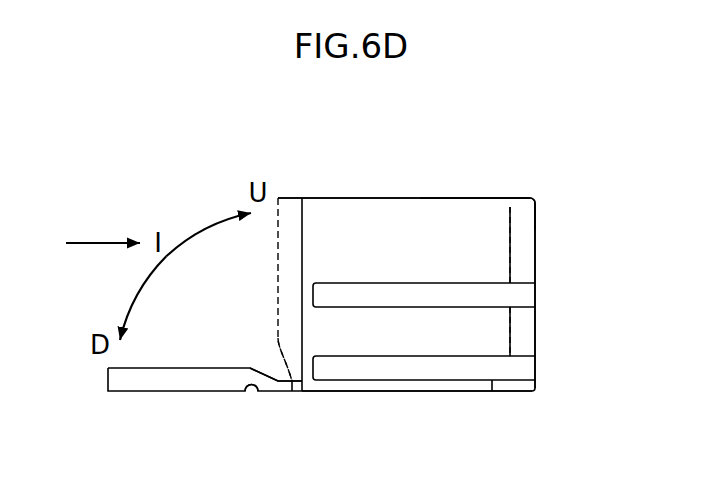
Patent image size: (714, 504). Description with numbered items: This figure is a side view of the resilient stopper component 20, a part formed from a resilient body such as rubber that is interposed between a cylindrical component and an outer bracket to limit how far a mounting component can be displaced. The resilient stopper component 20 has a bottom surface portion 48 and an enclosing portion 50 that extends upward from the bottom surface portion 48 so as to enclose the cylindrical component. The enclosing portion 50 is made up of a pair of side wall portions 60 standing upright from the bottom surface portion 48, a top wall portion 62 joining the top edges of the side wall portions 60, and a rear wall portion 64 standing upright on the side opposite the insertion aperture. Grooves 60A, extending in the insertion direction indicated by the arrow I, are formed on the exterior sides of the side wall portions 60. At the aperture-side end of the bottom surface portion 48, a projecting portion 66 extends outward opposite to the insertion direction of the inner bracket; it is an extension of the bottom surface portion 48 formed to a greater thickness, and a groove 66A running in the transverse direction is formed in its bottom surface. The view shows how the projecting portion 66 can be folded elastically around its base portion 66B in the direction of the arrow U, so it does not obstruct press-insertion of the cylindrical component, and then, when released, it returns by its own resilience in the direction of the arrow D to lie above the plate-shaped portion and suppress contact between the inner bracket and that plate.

The resilient stopper component 20 is at (576, 201).
The top wall portion 62 is at (426, 194).
The enclosing portion 50 is at (523, 194).
The rear wall portion 64 is at (536, 233).
The side wall portions 60 is at (502, 258).
The grooves 60A is at (523, 293).
The bottom surface portion 48 is at (429, 395).
The projecting portion 66 is at (275, 242).
The groove 66A is at (284, 346).
The base portion 66B is at (300, 392).